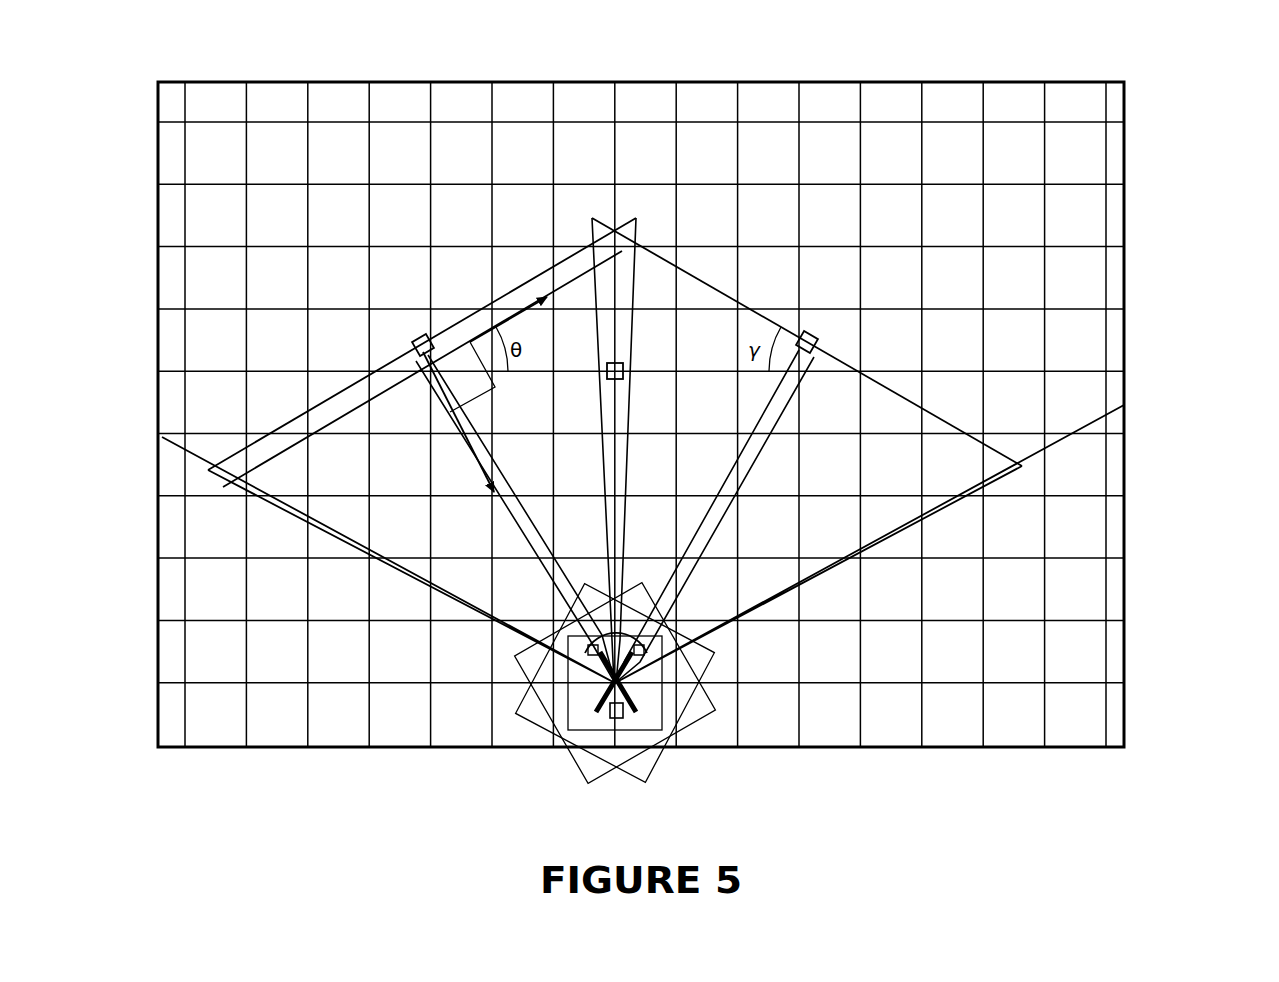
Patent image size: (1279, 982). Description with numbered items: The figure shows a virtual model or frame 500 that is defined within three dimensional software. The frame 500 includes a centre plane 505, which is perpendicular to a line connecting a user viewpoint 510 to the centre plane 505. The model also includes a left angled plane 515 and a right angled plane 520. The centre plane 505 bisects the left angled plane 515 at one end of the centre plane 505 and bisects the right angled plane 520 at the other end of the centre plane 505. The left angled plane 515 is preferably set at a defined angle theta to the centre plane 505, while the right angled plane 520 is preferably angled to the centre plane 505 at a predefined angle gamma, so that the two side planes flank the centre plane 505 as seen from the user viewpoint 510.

The virtual model or frame 500 is at (1145, 151).
The centre plane 505 is at (698, 371).
The user viewpoint 510 is at (596, 737).
The left angled plane 515 is at (283, 453).
The right angled plane 520 is at (937, 417).